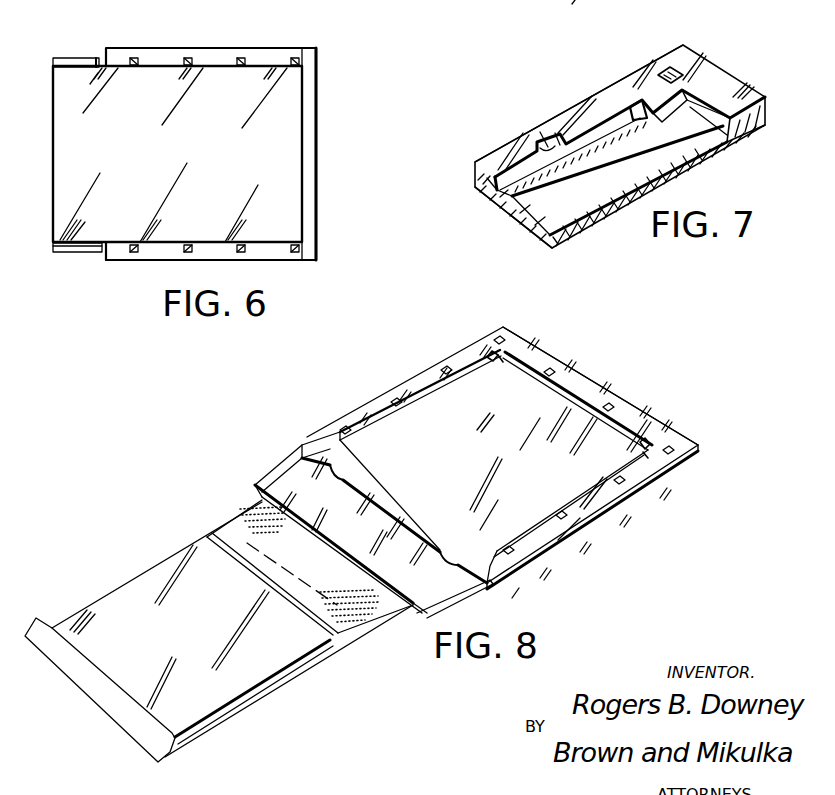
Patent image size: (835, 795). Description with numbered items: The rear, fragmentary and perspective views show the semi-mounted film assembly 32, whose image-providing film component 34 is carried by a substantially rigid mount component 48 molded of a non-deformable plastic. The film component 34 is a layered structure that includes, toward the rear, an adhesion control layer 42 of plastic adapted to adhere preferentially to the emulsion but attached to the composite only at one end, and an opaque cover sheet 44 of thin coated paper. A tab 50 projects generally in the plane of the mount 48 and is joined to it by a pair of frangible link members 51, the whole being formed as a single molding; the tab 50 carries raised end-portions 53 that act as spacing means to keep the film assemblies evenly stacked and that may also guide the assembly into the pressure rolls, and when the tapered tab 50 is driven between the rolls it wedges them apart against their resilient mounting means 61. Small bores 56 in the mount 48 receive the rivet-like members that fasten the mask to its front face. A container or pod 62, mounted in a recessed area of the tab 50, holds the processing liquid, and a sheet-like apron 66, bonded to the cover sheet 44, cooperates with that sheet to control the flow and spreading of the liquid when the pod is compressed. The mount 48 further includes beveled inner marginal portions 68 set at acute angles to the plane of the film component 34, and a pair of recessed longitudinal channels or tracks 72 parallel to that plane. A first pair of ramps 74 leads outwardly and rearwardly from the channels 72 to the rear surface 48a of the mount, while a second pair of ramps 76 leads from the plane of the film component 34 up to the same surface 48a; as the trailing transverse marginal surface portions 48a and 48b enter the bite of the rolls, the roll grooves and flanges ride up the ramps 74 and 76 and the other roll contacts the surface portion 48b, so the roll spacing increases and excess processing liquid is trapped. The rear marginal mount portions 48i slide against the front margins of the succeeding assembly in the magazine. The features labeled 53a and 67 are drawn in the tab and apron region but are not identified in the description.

In FIG. 6, the film assembly 32 is at (330, 78).
In FIG. 8, the film assembly 32 is at (450, 617).
In FIG. 7, the image-providing film component 34 is at (657, 183).
In FIG. 8, the image-providing film component 34 is at (522, 441).
In FIG. 8, the adhesion control layer 42 is at (197, 634).
In FIG. 6, the opaque cover sheet 44 is at (200, 147).
In FIG. 8, the opaque cover sheet 44 is at (160, 738).
In FIG. 6, the mount component 48 is at (308, 136).
In FIG. 7, the mount component 48 is at (761, 130).
In FIG. 8, the mount component 48 is at (565, 544).
In FIG. 6, the rear surface of the mount 48a is at (308, 197).
In FIG. 7, the rear surface of the mount 48a is at (705, 72).
In FIG. 8, the rear surface of the mount 48a is at (618, 403).
In FIG. 7, the transverse surface portion of the mount 48b is at (762, 98).
In FIG. 6, the rear marginal mount portions 48i is at (220, 253).
In FIG. 6, the tab 50 is at (75, 62).
In FIG. 8, the tab 50 is at (252, 484).
In FIG. 8, the frangible link members 51 is at (335, 470).
In FIG. 8, the raised end-portions 53 is at (300, 460).
In FIG. 8, the slide channel 53a is at (433, 583).
In FIG. 6, the small bores 56 is at (297, 62).
In FIG. 7, the small bores 56 is at (673, 70).
In FIG. 8, the small bores 56 is at (397, 403).
In FIG. 7, the resilient mounting means 61 is at (575, 2).
In FIG. 8, the container or pod 62 is at (367, 623).
In FIG. 8, the apron 66 is at (315, 571).
In FIG. 8, the adhesive pad 67 is at (357, 608).
In FIG. 7, the beveled inner marginal portion 68 is at (705, 112).
In FIG. 8, the beveled inner marginal portion 68 is at (563, 395).
In FIG. 7, the recessed longitudinal channels 72 is at (585, 143).
In FIG. 8, the recessed longitudinal channels 72 is at (427, 397).
In FIG. 7, the first pair of ramps 74 is at (641, 110).
In FIG. 8, the first pair of ramps 74 is at (487, 355).
In FIG. 7, the second pair of ramps 76 is at (683, 107).
In FIG. 8, the second pair of ramps 76 is at (502, 363).